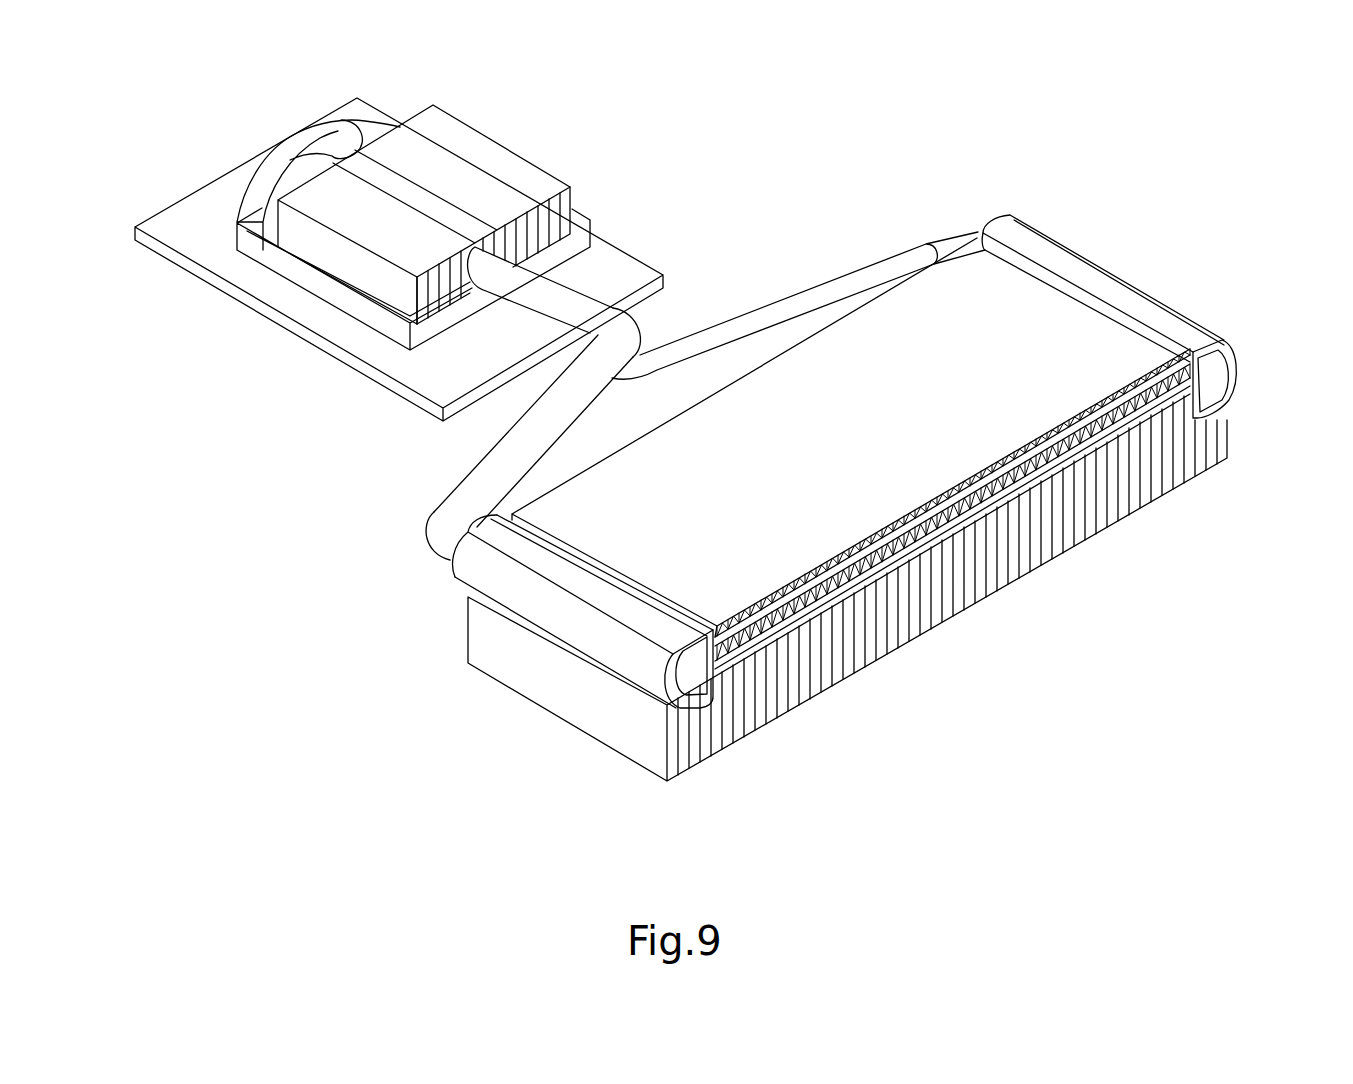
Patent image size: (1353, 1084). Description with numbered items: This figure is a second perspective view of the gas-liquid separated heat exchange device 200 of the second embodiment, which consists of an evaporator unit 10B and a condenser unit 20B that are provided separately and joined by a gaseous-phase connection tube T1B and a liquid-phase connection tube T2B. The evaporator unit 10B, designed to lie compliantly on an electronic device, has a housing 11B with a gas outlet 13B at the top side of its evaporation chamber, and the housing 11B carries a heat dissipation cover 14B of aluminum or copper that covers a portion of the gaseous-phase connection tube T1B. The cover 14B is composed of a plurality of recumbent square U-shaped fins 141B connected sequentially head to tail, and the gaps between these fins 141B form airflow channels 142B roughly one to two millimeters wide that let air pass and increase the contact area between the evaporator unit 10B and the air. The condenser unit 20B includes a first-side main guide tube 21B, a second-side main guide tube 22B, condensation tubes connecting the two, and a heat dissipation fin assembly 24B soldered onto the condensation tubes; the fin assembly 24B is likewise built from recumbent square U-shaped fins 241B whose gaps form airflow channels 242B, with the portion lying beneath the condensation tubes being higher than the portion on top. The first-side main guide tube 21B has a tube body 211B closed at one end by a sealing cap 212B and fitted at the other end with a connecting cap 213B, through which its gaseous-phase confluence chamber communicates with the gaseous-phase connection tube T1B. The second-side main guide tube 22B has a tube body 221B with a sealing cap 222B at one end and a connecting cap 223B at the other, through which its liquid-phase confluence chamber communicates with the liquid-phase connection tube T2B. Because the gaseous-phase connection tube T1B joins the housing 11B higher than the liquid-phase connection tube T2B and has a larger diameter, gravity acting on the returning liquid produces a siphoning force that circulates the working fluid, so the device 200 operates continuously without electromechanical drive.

The gas-liquid separated heat exchange device 200 is at (1216, 133).
The evaporator unit 10B is at (260, 303).
The housing 11B is at (252, 226).
The gas outlet 13B is at (340, 140).
The heat dissipation cover 14B is at (569, 182).
The recumbent square U-shaped fins 141B is at (567, 200).
The airflow channels 142B is at (567, 218).
The gaseous-phase connection tube T1B is at (493, 472).
The liquid-phase connection tube T2B is at (703, 347).
The condenser unit 20B is at (756, 479).
The first-side main guide tube 21B is at (439, 614).
The tube body 211B is at (557, 610).
The sealing cap 212B is at (687, 687).
The connecting cap 213B is at (452, 570).
The second-side main guide tube 22B is at (1164, 292).
The tube body 221B is at (1087, 275).
The sealing cap 222B is at (1208, 372).
The connecting cap 223B is at (1010, 215).
The heat dissipation fin assembly 24B is at (961, 574).
The recumbent square U-shaped fins 241B is at (907, 640).
The airflow channels 242B is at (873, 567).